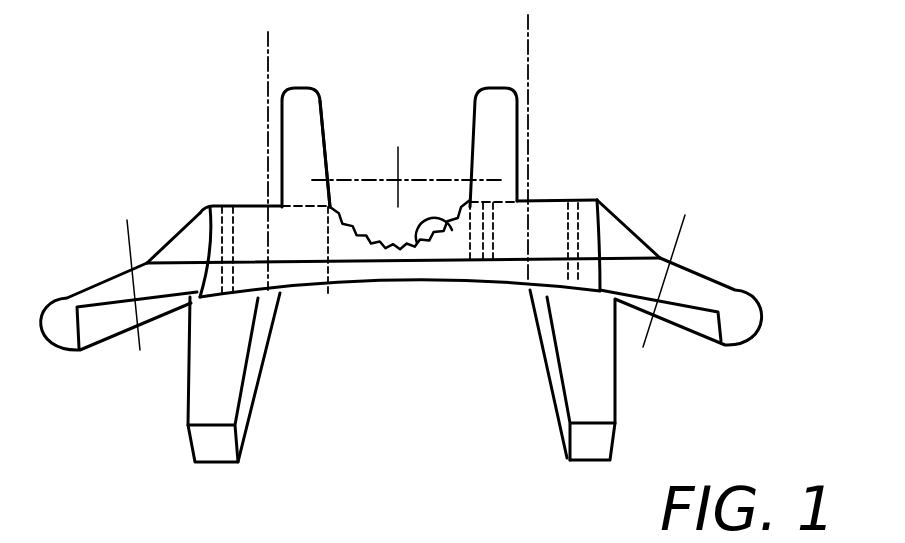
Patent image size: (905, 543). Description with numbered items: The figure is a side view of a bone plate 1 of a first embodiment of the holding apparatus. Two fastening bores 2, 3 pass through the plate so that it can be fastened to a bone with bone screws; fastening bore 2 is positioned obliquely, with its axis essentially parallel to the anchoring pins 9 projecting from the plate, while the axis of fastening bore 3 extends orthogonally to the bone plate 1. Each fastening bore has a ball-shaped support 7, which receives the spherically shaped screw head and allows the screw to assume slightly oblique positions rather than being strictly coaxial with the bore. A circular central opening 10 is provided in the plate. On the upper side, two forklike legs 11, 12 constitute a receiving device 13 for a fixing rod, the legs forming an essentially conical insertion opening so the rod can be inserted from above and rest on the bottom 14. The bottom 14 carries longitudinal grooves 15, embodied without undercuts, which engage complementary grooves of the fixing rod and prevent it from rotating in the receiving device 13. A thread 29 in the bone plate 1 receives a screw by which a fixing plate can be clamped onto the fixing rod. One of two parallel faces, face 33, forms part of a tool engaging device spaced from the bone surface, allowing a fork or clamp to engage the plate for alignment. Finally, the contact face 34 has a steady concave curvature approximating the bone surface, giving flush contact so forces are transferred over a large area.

The bone plate 1 is at (600, 195).
The fastening bore 2 is at (157, 260).
The fastening bore 3 is at (687, 290).
The ball-shaped support 7 is at (203, 233).
The anchoring pins 9 is at (220, 387).
The central opening 10 is at (330, 245).
The forklike leg 11 is at (298, 118).
The forklike leg 12 is at (498, 125).
The receiving device 13 is at (423, 128).
The bottom 14 is at (418, 243).
The longitudinal grooves 15 is at (376, 243).
The thread 29 is at (233, 247).
The face 33 is at (300, 235).
The contact face 34 is at (517, 292).